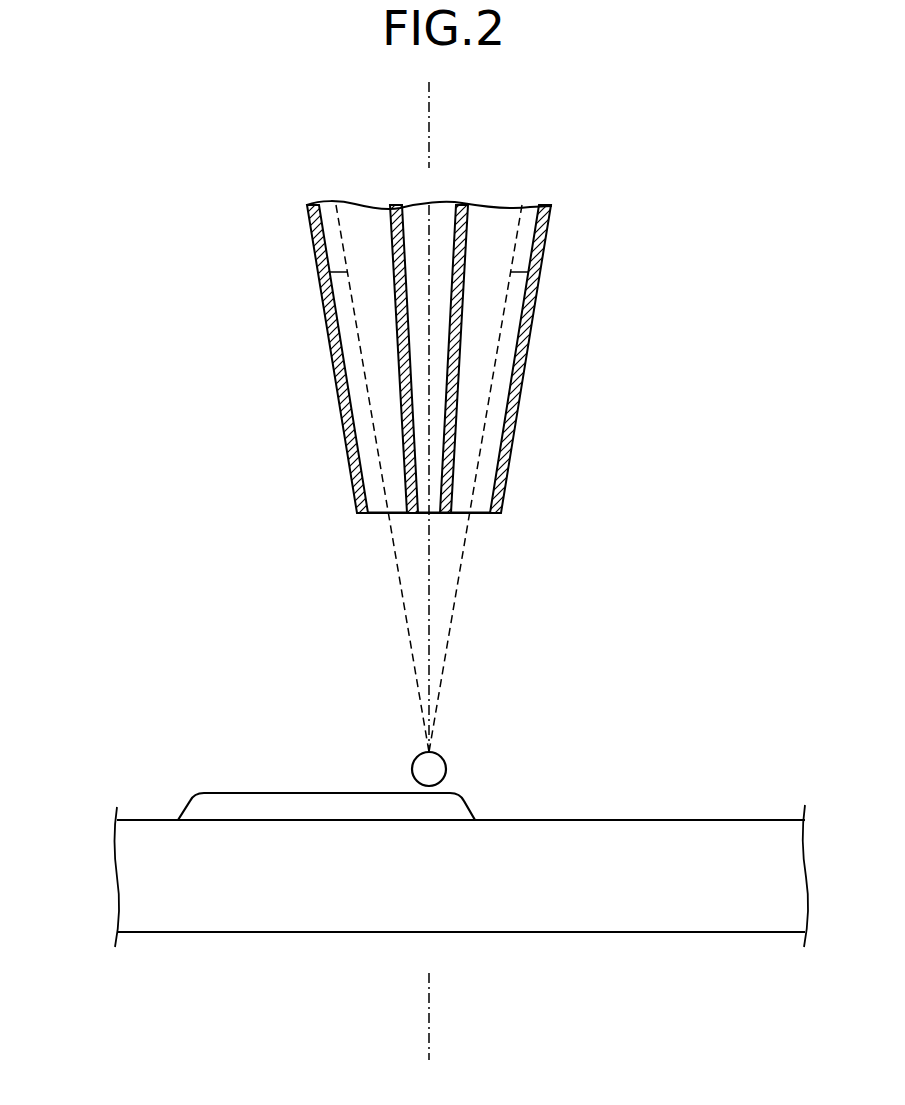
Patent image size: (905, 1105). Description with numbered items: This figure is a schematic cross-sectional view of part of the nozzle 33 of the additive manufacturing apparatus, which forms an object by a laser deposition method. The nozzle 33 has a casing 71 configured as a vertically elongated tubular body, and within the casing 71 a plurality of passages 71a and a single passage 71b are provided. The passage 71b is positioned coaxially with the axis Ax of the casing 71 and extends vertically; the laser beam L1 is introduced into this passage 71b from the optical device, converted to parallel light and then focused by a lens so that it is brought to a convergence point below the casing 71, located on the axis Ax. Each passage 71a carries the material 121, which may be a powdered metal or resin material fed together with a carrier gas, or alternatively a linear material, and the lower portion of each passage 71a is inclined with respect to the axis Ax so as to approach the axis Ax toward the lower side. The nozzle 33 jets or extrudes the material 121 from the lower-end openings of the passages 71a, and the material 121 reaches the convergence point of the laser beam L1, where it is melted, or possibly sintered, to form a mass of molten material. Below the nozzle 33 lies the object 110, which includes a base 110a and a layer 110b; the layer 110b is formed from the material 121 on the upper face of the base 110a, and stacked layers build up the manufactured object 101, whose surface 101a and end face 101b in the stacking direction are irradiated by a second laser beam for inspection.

The nozzle 33 is at (547, 232).
The casing 71 is at (518, 420).
The passage 71a is at (380, 505).
The passage 71b is at (422, 505).
The material 121 is at (318, 278).
The laser beam L1 is at (430, 617).
The axis Ax is at (430, 118).
The object 110 is at (462, 851).
The base 110a is at (712, 818).
The layer 110b is at (297, 792).
The manufactured object 101 is at (255, 752).
The surface 101a is at (255, 752).
The end face 101b is at (208, 792).